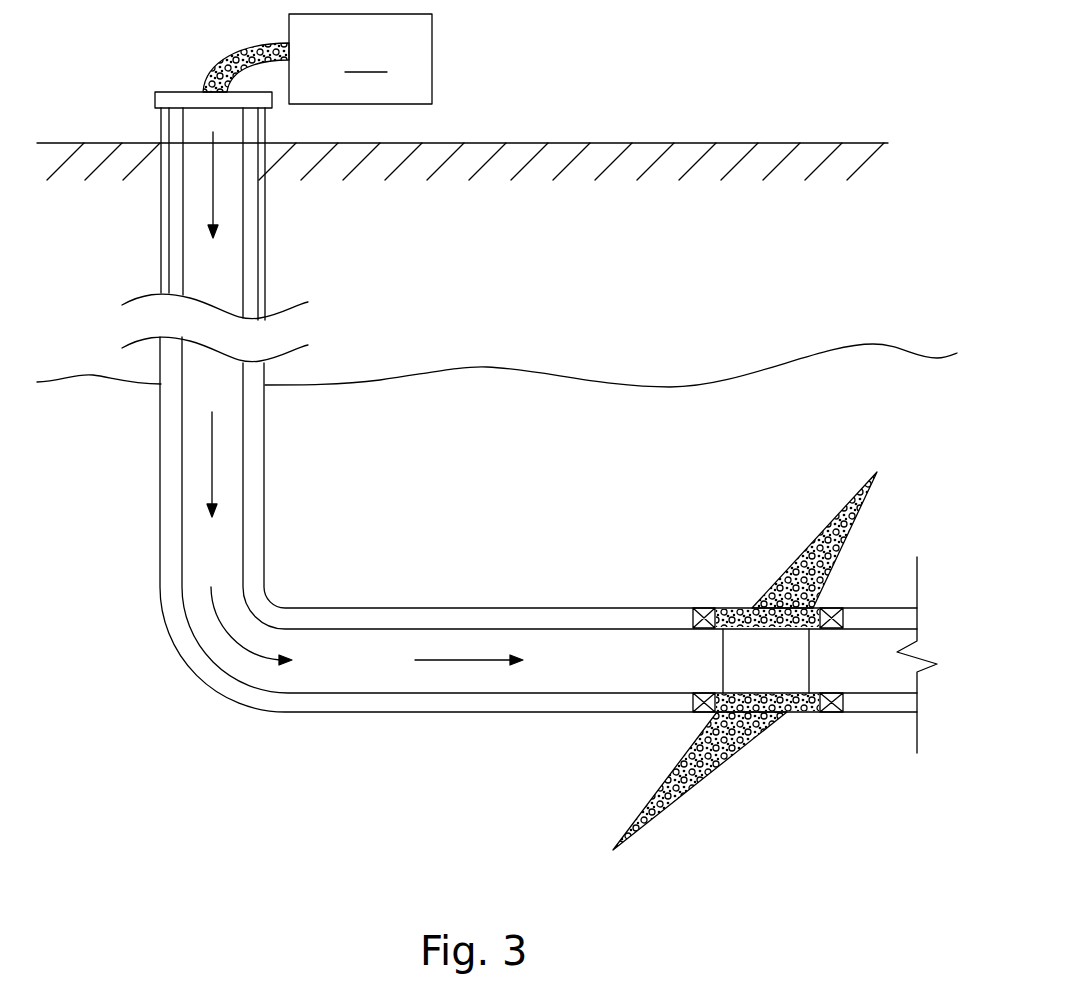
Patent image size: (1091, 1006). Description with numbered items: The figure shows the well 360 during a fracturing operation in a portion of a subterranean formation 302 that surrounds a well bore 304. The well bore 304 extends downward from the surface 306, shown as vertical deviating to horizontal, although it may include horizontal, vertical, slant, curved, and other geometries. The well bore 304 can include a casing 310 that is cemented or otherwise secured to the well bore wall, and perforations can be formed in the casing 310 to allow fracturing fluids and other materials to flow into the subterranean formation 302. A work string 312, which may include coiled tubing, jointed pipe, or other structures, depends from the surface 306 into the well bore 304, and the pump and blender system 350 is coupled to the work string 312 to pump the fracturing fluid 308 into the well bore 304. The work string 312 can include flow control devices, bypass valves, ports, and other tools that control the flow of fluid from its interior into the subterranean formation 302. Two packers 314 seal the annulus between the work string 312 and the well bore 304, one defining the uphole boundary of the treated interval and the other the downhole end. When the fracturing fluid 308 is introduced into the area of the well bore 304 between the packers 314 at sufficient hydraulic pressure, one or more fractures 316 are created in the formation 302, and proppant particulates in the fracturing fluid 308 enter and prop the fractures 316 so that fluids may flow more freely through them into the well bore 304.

The subterranean formation 302 is at (512, 418).
The well bore 304 is at (177, 233).
The surface 306 is at (643, 143).
The fracturing fluid 308 is at (230, 56).
The casing 310 is at (170, 273).
The work string 312 is at (182, 513).
The packers 314 is at (708, 607).
The fractures 316 is at (800, 543).
The pump and blender system 350 is at (360, 59).
The well 360 is at (180, 695).